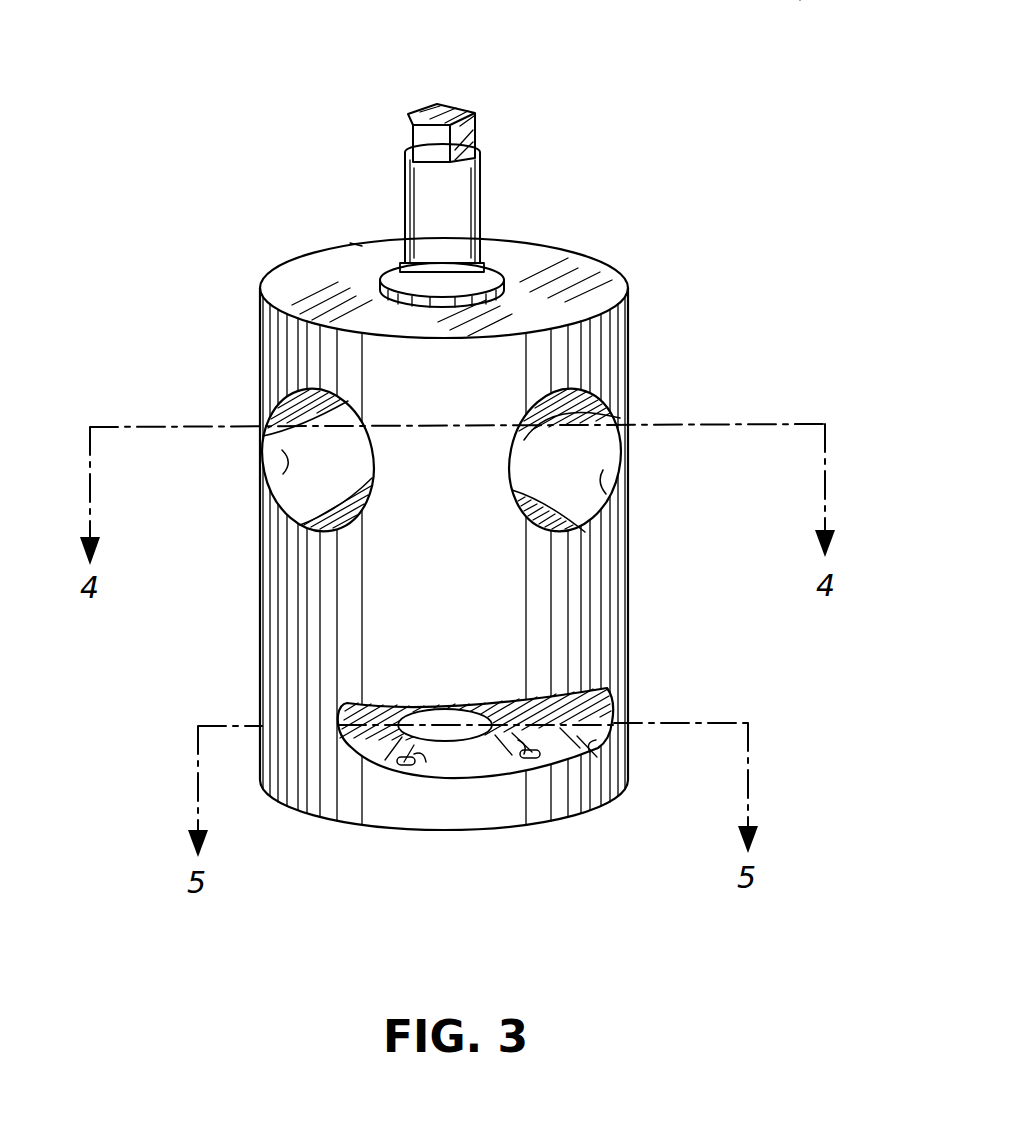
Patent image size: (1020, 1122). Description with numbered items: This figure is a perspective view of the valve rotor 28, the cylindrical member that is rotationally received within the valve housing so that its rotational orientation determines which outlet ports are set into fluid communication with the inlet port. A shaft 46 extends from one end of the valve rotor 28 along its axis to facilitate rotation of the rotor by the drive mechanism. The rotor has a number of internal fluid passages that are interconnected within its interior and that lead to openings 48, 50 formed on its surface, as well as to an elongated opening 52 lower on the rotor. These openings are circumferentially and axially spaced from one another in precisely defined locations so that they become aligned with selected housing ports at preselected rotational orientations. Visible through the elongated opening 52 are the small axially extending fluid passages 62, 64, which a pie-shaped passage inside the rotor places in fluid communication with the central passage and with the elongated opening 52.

The valve rotor 28 is at (634, 165).
The shaft 46 is at (483, 188).
The opening 48 is at (283, 470).
The opening 50 is at (604, 494).
The elongated opening 52 is at (598, 748).
The axially extending fluid passage 62 is at (420, 764).
The axially extending fluid passage 64 is at (512, 747).